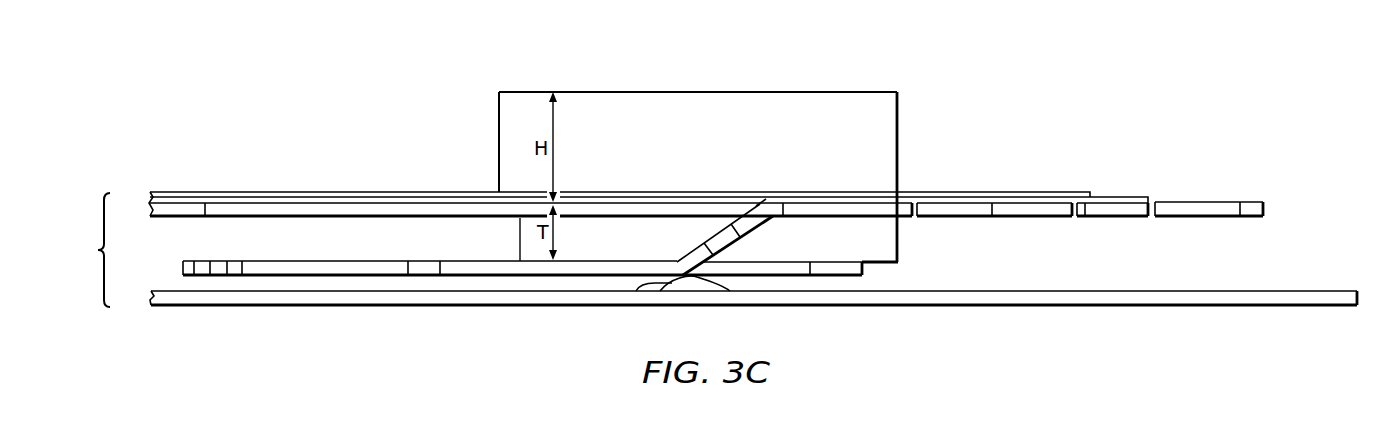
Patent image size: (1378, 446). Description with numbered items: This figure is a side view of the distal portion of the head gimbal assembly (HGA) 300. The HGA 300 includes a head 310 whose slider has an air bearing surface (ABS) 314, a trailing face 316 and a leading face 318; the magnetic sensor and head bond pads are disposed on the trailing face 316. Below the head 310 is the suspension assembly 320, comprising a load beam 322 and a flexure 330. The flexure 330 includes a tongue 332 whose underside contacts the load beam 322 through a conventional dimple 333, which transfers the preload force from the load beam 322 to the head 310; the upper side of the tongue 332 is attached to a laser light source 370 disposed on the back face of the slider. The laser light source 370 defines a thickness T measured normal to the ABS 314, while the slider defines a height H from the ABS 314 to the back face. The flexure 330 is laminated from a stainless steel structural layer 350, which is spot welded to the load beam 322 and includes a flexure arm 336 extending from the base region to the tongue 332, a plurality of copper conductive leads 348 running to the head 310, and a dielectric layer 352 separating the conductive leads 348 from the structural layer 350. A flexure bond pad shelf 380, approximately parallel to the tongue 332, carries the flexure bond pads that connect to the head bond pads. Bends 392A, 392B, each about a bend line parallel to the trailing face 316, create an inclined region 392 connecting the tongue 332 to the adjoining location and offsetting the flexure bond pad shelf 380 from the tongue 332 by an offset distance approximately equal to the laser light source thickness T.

The head gimbal assembly (HGA) 300 is at (930, 67).
The head 310 is at (709, 144).
The air bearing surface (ABS) 314 is at (718, 91).
The trailing face 316 is at (898, 136).
The leading face 318 is at (499, 135).
The suspension assembly 320 is at (83, 250).
The load beam 322 is at (332, 300).
The flexure 330 is at (685, 194).
The tongue 332 is at (293, 268).
The dimple 333 is at (650, 289).
The flexure arm 336 is at (413, 212).
The conductive leads 348 is at (1047, 191).
The structural layer 350 is at (1205, 202).
The dielectric layer 352 is at (1110, 196).
The laser light source 370 is at (848, 250).
The flexure bond pad shelf 380 is at (983, 191).
The inclined region 392 is at (742, 228).
The bend 392A is at (677, 261).
The bend 392B is at (762, 203).